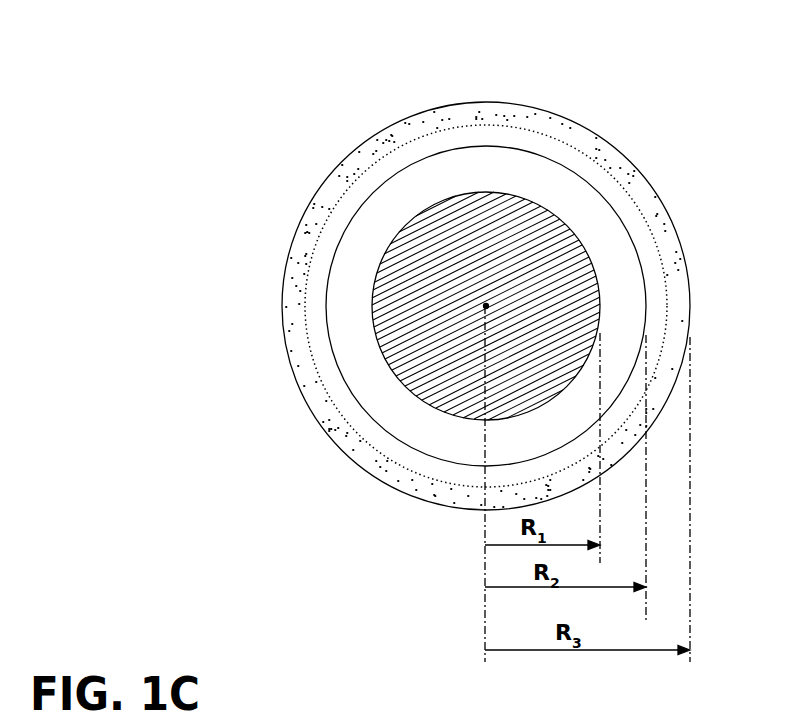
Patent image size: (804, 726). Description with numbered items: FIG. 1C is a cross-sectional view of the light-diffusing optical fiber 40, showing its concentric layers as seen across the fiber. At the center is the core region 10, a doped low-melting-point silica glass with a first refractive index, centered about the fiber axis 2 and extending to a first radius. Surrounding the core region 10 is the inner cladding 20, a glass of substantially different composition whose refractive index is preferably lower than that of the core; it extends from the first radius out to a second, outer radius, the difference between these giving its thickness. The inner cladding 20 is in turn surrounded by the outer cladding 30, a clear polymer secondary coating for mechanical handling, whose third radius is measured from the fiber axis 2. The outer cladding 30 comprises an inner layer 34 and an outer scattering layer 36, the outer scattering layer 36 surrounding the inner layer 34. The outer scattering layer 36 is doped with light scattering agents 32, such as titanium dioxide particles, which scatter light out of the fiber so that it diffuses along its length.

The axis 2 is at (488, 305).
The core region 10 is at (410, 272).
The inner cladding 20 is at (347, 311).
The outer cladding 30 is at (425, 325).
The light scattering agents 32 is at (463, 115).
The inner layer 34 is at (352, 421).
The outer scattering layer 36 is at (363, 465).
The light-diffusing optical fiber 40 is at (595, 63).